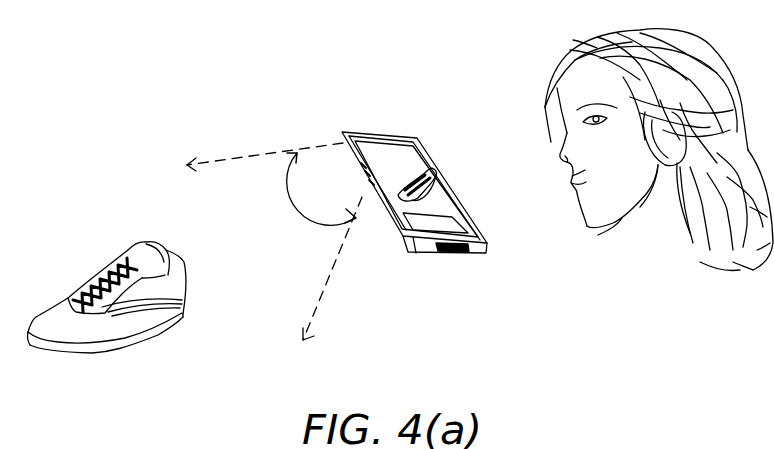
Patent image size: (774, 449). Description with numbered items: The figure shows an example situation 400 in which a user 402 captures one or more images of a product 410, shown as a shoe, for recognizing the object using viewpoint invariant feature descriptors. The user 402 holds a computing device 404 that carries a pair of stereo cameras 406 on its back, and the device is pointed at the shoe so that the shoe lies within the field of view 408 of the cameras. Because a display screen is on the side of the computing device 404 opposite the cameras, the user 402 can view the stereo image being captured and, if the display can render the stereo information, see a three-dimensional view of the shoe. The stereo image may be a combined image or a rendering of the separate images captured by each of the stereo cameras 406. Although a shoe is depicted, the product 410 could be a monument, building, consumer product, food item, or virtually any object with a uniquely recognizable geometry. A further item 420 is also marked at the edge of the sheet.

The example situation 400 is at (110, 85).
The user 402 is at (540, 78).
The computing device 404 is at (417, 244).
The pair of stereo cameras 406 is at (385, 138).
The field of view 408 is at (274, 241).
The product 410 is at (87, 354).
The partial element 420 is at (681, 443).